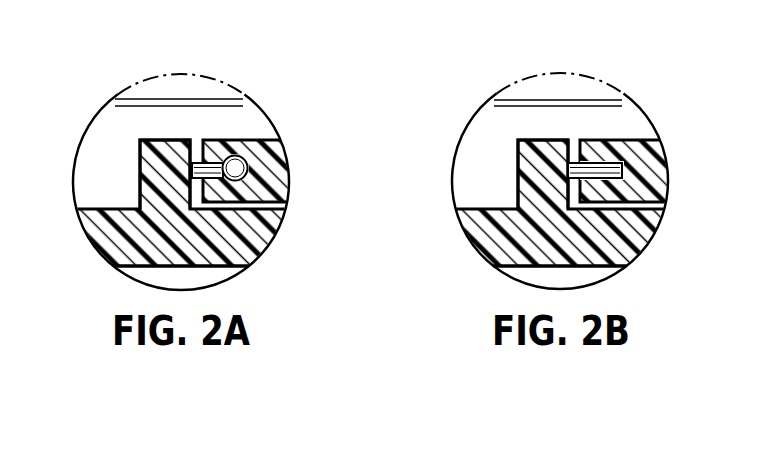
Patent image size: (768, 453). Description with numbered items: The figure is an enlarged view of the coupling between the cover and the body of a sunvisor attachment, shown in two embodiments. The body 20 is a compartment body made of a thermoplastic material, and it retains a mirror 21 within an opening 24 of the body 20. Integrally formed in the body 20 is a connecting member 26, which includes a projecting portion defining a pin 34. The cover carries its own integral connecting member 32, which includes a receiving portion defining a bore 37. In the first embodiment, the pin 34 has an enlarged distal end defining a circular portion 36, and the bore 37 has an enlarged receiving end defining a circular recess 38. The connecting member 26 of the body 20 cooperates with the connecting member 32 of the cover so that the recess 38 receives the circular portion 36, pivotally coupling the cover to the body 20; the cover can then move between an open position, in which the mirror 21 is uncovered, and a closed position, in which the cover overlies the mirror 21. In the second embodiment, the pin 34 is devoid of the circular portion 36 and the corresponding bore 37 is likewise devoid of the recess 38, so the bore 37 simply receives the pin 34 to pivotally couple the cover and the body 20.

In FIG. 2A, the body 20 is at (72, 229).
In FIG. 2B, the body 20 is at (449, 222).
In FIG. 2A, the mirror 21 is at (210, 278).
In FIG. 2B, the mirror 21 is at (590, 277).
In FIG. 2A, the opening 24 is at (138, 279).
In FIG. 2B, the opening 24 is at (510, 279).
In FIG. 2A, the connecting member 26 is at (160, 180).
In FIG. 2B, the connecting member 26 is at (540, 172).
In FIG. 2A, the connecting member 32 is at (253, 140).
In FIG. 2B, the connecting member 32 is at (602, 140).
In FIG. 2A, the pin 34 is at (197, 140).
In FIG. 2B, the pin 34 is at (612, 165).
In FIG. 2A, the circular portion 36 is at (248, 158).
In FIG. 2A, the bore 37 is at (212, 163).
In FIG. 2B, the bore 37 is at (622, 174).
In FIG. 2A, the circular recess 38 is at (248, 171).